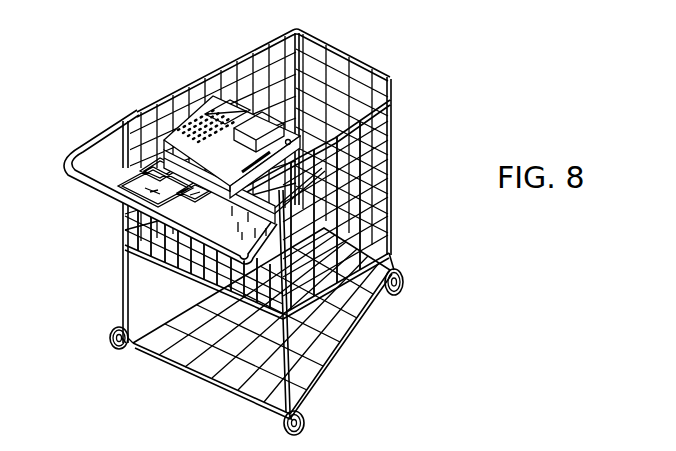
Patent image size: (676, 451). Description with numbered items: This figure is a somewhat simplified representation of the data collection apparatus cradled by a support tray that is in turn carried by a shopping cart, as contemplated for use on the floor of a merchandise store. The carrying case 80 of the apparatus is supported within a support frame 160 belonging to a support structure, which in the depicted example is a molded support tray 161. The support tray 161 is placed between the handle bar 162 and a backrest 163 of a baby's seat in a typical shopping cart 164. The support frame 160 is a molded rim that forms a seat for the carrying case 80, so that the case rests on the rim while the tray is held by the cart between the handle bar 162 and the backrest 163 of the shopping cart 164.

The carrying case 80 is at (193, 128).
The support frame 160 is at (162, 148).
The support tray 161 is at (117, 170).
The handle bar 162 is at (88, 178).
The backrest 163 is at (336, 194).
The shopping cart 164 is at (394, 124).